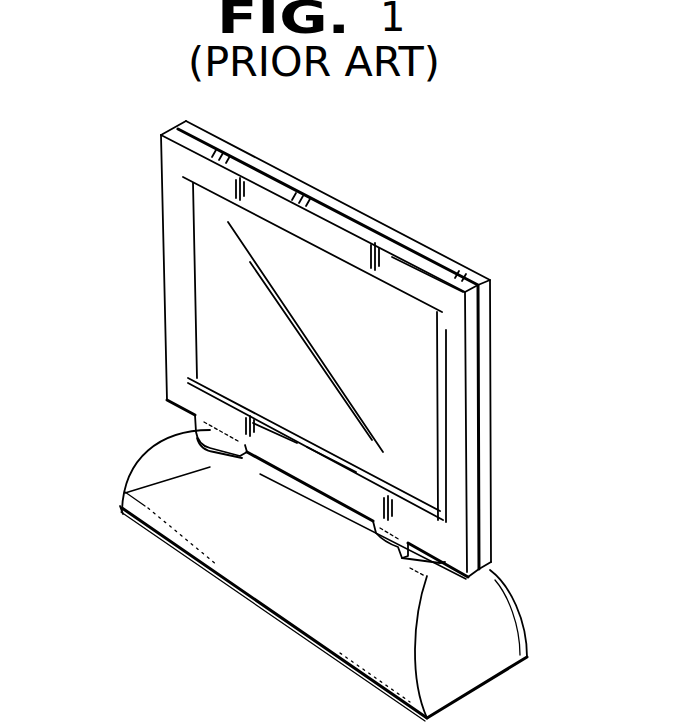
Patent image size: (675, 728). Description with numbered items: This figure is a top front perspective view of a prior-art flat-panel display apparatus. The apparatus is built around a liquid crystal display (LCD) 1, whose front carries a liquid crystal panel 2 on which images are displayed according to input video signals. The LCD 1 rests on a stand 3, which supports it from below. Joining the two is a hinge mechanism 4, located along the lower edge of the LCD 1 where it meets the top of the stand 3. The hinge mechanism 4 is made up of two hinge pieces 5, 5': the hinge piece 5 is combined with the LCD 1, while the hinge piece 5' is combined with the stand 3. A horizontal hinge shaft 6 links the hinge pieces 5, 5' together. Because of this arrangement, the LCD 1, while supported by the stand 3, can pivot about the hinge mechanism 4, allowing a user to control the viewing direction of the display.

The liquid crystal display (LCD) 1 is at (158, 345).
The liquid crystal panel 2 is at (188, 378).
The stand 3 is at (220, 528).
The hinge mechanism 4 is at (416, 553).
The hinge piece 5 is at (127, 472).
The hinge piece 5' is at (68, 538).
The horizontal hinge shaft 6 is at (395, 523).